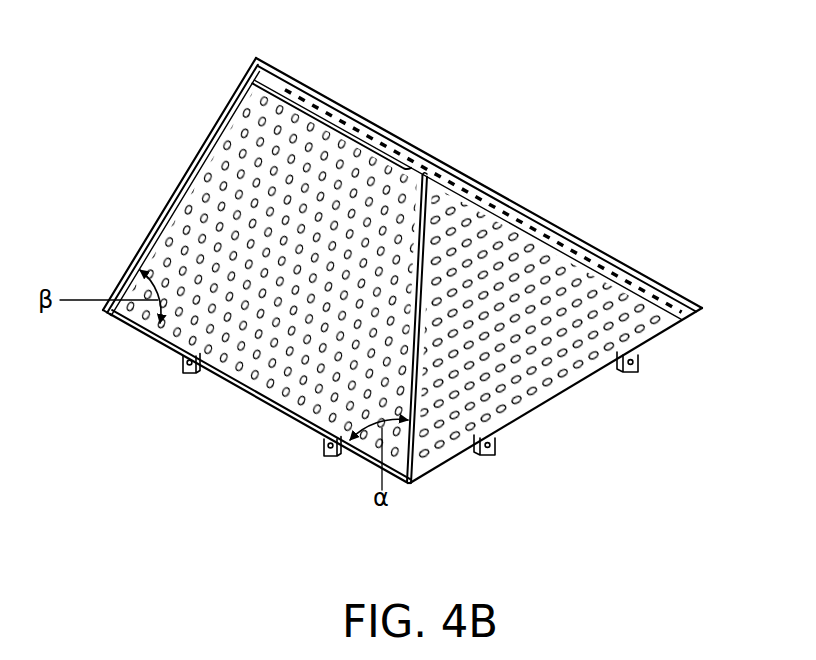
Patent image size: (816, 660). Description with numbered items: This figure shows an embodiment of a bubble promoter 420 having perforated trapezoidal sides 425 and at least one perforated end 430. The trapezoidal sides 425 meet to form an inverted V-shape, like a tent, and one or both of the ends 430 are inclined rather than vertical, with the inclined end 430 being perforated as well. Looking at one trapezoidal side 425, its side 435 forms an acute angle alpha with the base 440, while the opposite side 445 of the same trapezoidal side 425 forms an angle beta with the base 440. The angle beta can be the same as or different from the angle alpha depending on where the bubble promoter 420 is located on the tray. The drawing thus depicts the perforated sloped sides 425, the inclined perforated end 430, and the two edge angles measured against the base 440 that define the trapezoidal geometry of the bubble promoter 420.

The bubble promoter 420 is at (131, 139).
The perforated trapezoidal side 425 is at (205, 325).
The perforated end 430 is at (565, 323).
The side of the trapezoidal side 435 is at (417, 402).
The base 440 is at (282, 407).
The opposite side of the trapezoidal side 445 is at (150, 226).